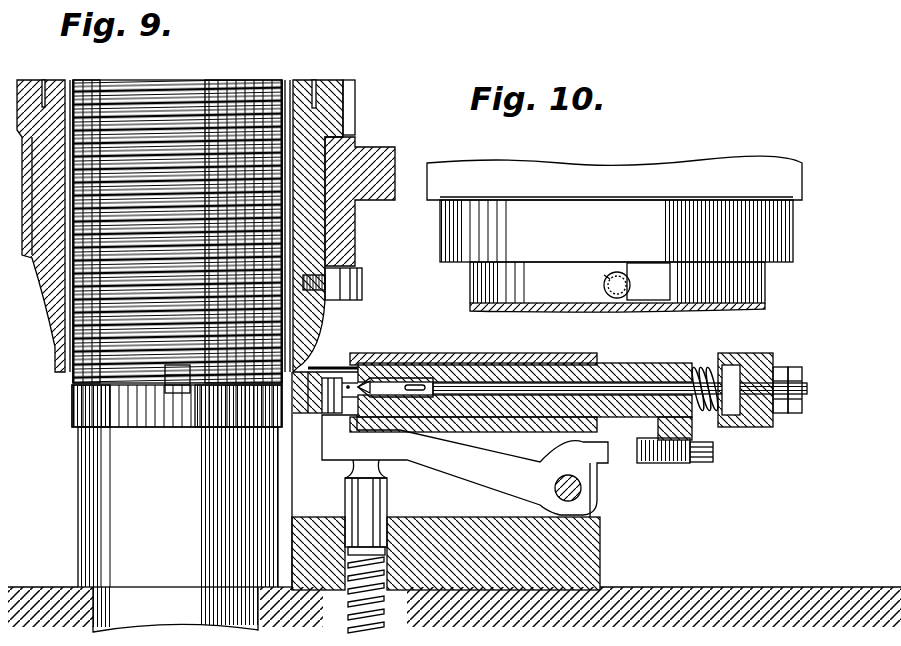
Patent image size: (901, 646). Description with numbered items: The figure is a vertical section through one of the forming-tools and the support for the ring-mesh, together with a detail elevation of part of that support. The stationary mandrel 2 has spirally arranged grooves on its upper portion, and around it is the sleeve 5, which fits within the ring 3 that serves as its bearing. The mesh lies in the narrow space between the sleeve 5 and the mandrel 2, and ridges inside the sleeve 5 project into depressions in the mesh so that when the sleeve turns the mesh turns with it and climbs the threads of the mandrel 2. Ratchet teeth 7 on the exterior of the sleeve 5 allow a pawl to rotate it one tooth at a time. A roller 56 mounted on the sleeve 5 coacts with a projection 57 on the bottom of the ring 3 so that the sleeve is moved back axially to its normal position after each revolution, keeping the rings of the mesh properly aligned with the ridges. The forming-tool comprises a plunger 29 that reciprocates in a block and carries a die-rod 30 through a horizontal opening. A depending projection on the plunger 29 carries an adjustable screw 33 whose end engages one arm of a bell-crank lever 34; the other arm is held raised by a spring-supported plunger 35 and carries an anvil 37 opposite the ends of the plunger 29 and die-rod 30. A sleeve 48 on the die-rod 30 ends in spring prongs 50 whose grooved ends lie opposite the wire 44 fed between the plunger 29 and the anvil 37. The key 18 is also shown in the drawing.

In FIG. 9, the mandrel 2 is at (177, 508).
In FIG. 9, the ring 3 is at (340, 210).
In FIG. 10, the ring 3 is at (616, 231).
In FIG. 9, the sleeve 5 is at (307, 318).
In FIG. 10, the sleeve 5 is at (476, 288).
In FIG. 9, the ratchet teeth 7 is at (350, 117).
In FIG. 9, the key 18 is at (172, 393).
In FIG. 9, the plunger 29 is at (532, 367).
In FIG. 9, the die-rod 30 is at (640, 385).
In FIG. 9, the adjustable screw 33 is at (713, 455).
In FIG. 9, the bell-crank lever 34 is at (465, 466).
In FIG. 9, the plunger 35 is at (356, 503).
In FIG. 9, the anvil 37 is at (324, 393).
In FIG. 9, the wire 44 is at (351, 385).
In FIG. 9, the sleeve 48 is at (426, 378).
In FIG. 9, the prongs 50 is at (357, 398).
In FIG. 9, the roller 56 is at (341, 292).
In FIG. 10, the roller 56 is at (631, 285).
In FIG. 10, the projection 57 is at (605, 277).